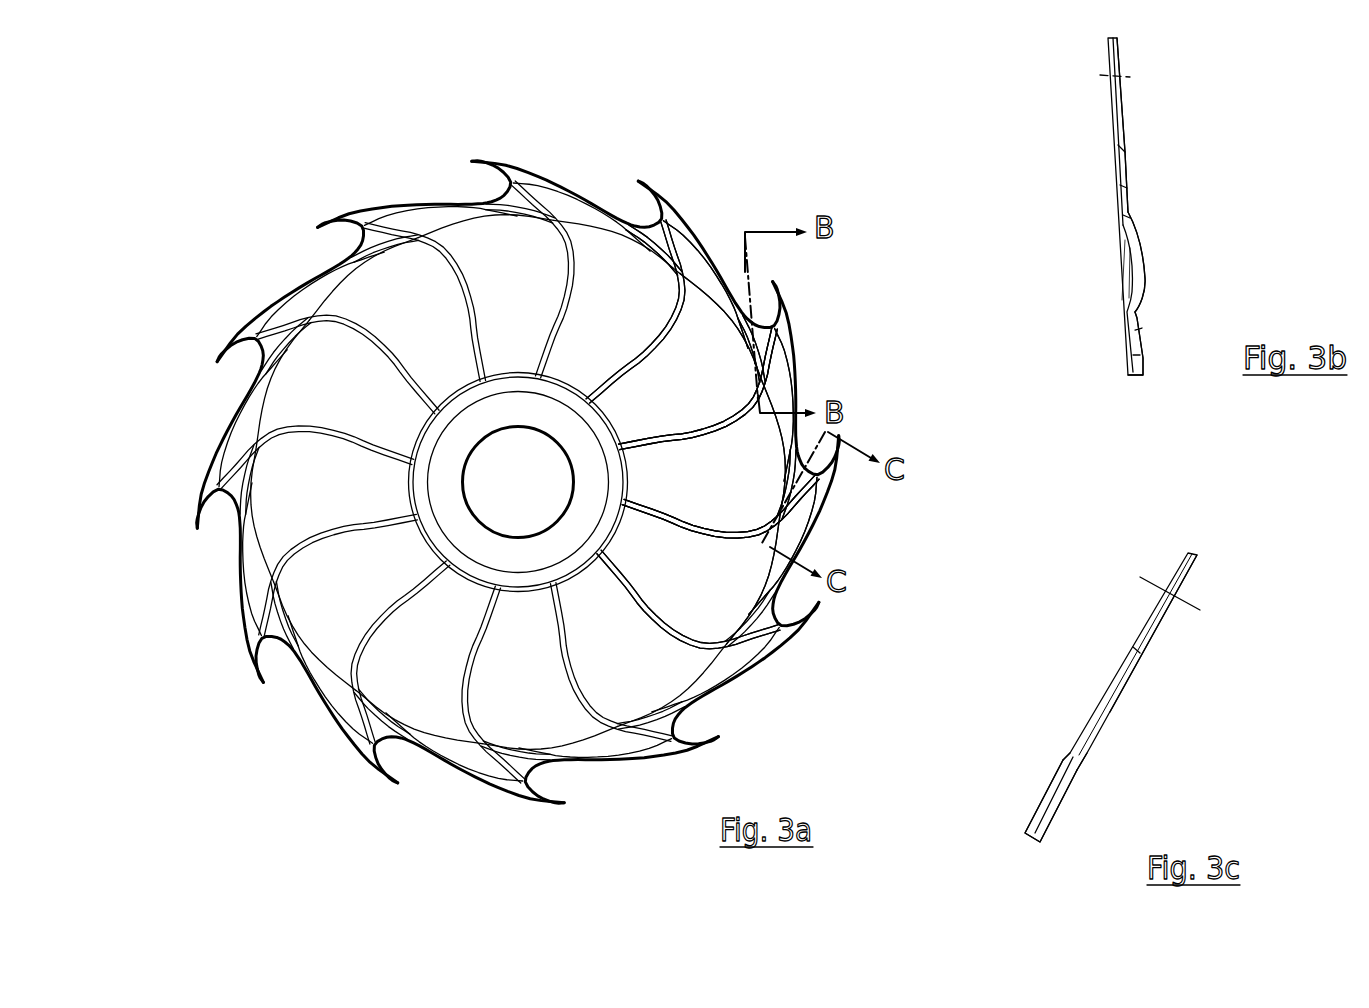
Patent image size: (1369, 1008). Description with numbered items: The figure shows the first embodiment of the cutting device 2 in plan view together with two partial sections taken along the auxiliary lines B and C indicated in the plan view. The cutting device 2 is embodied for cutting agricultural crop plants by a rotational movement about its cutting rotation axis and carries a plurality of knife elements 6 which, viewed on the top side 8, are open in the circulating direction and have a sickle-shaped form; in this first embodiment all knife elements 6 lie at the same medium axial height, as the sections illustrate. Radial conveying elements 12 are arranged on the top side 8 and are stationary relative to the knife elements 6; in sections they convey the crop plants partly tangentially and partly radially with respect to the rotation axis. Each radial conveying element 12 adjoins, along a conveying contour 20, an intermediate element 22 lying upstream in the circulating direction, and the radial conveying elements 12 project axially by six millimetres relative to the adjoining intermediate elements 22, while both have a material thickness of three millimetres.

In FIG. 3A, the cutting device 2 is at (200, 145).
In FIG. 3B, the knife element 6 is at (1128, 57).
In FIG. 3C, the knife element 6 is at (1198, 572).
In FIG. 3B, the top side 8 is at (1140, 162).
In FIG. 3C, the top side 8 is at (1135, 688).
In FIG. 3A, the radial conveying element 12 is at (716, 399).
In FIG. 3B, the radial conveying element 12 is at (1141, 268).
In FIG. 3C, the radial conveying element 12 is at (1058, 808).
In FIG. 3C, the conveying contour 20 is at (1100, 765).
In FIG. 3A, the intermediate element 22 is at (740, 494).
In FIG. 3B, the intermediate element 22 is at (1134, 350).